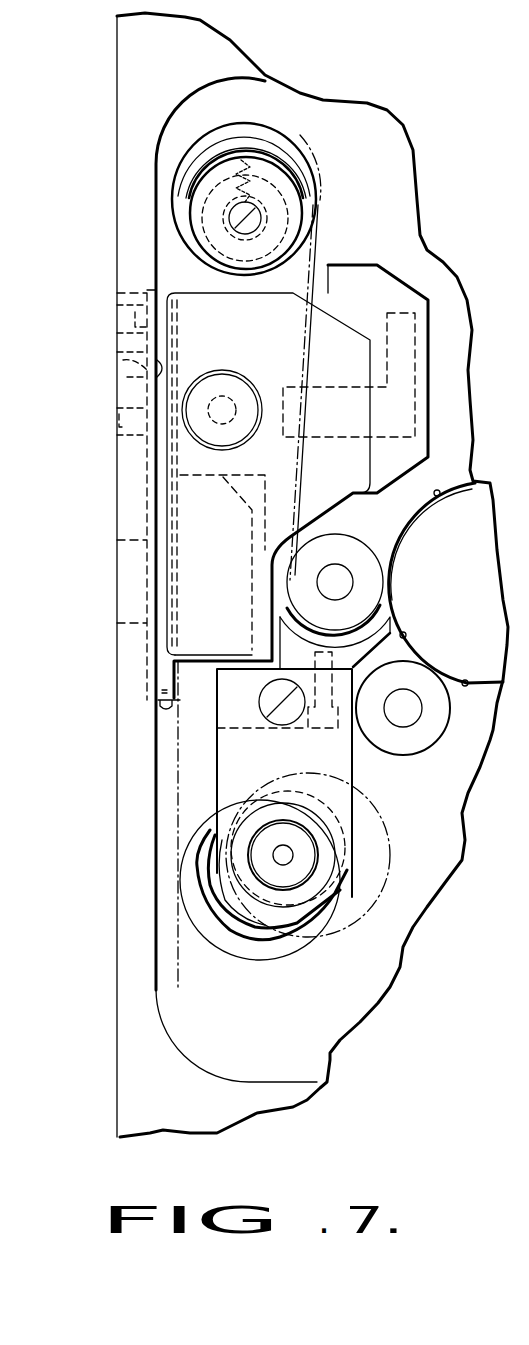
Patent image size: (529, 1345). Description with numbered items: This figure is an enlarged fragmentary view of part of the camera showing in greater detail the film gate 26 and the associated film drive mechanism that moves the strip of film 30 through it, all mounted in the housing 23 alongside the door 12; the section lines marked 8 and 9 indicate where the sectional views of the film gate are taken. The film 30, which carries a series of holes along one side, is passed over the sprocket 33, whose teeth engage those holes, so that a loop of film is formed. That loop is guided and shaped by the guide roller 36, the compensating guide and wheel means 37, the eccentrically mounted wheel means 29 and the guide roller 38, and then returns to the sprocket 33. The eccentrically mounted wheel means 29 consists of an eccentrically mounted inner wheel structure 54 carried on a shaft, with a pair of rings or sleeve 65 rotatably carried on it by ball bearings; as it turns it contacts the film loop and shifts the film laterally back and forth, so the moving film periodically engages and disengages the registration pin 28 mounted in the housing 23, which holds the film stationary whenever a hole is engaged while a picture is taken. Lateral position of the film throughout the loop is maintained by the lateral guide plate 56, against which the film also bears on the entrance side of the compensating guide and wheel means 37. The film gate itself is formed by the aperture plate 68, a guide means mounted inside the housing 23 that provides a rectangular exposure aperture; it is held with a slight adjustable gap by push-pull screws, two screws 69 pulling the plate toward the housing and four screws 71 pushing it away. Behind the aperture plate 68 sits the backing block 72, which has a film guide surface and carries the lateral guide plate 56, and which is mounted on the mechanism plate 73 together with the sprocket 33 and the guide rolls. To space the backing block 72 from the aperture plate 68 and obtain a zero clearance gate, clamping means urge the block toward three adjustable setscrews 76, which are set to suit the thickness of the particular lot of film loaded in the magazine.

The section line 8- 8 is at (243, 105).
The section line 9- 9 is at (105, 412).
The door 12 is at (322, 575).
The housing 23 is at (125, 197).
The film gate 26 is at (189, 665).
The registration pin 28 is at (170, 713).
The eccentrically mounted wheel means 29 is at (273, 958).
The strip of film 30 is at (317, 244).
The sprocket 33 is at (472, 576).
The guide roller 36 is at (346, 542).
The compensating guide and wheel means 37 is at (322, 191).
The guide roller 38 is at (410, 749).
The eccentrically mounted inner wheel structure 54 is at (305, 862).
The lateral guide plate 56 is at (258, 360).
The rings or sleeve 65 is at (232, 938).
The aperture plate 68 is at (147, 667).
The screws 69 is at (138, 361).
The screws 71 is at (132, 436).
The backing block 72 is at (221, 298).
The mechanism plate 73 is at (445, 865).
The setscrews 76 is at (135, 315).